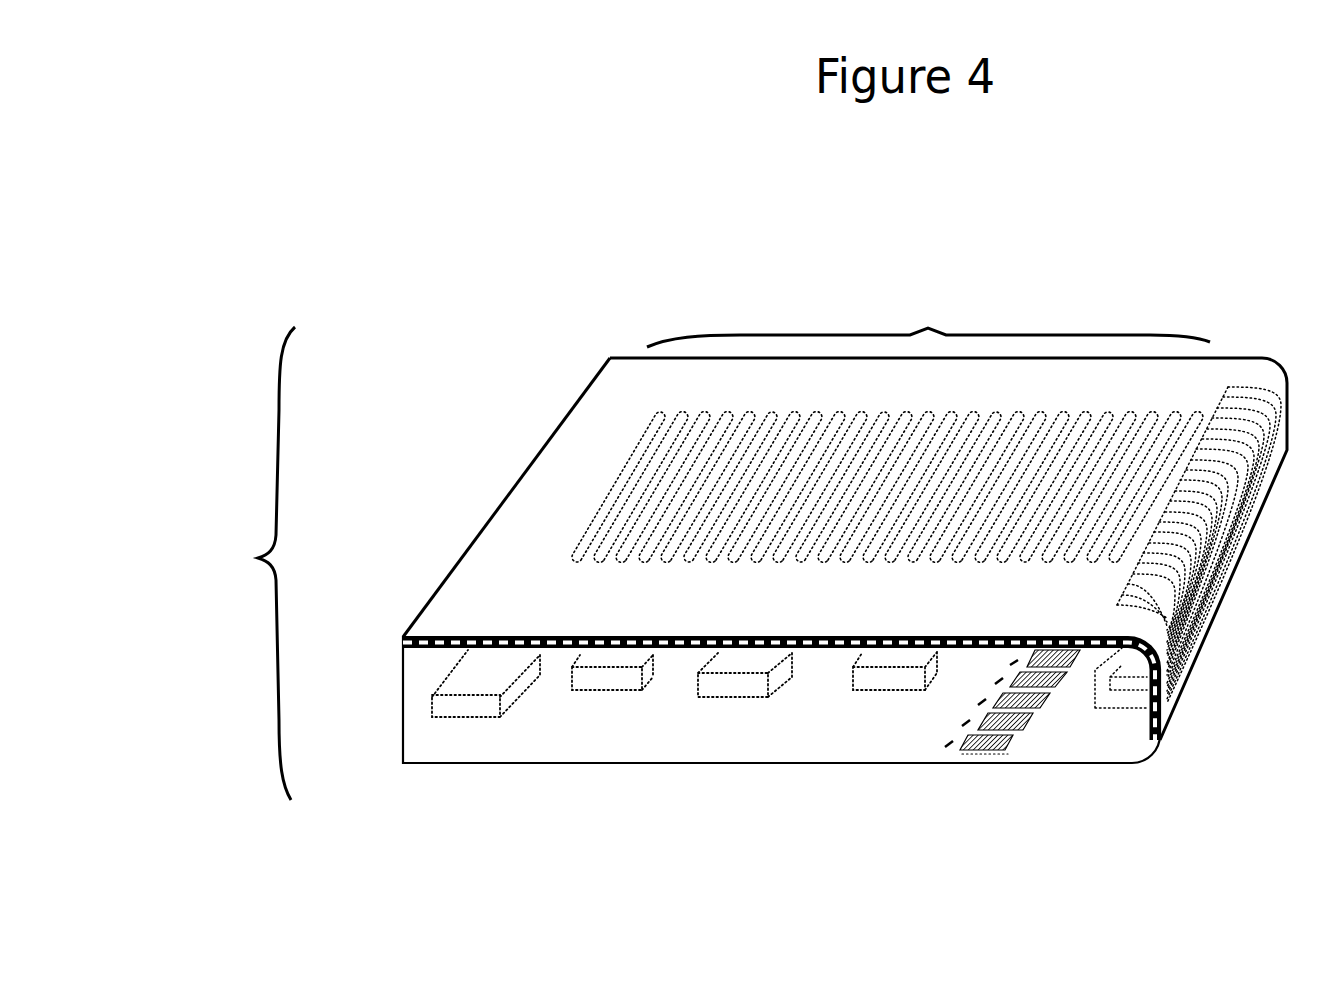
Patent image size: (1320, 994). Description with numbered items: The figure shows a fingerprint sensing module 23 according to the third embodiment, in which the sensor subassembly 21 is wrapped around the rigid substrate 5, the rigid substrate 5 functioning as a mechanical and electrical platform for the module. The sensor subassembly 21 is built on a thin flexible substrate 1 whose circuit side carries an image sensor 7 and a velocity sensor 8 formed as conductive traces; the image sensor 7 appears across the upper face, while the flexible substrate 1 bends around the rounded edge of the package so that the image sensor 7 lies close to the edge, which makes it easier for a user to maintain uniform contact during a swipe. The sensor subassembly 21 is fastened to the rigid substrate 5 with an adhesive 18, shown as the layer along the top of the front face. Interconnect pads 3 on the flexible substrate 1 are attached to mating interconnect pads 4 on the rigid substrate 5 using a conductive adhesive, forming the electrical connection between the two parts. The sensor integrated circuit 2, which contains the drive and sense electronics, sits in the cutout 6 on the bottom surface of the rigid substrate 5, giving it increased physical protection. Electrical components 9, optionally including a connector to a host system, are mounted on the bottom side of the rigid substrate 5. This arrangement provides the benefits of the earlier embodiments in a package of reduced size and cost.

The flexible substrate 1 is at (608, 360).
The sensor integrated circuit 2 is at (1138, 687).
The interconnect pads 3 is at (1013, 742).
The interconnect pads 4 is at (980, 745).
The rigid substrate 5 is at (400, 695).
The cutout 6 is at (1095, 710).
The image sensor 7 is at (1233, 378).
The velocity sensor 8 is at (630, 557).
The electrical components 9 is at (490, 717).
The adhesive 18 is at (400, 644).
The sensor subassembly 21 is at (928, 304).
The fingerprint sensing module 23 is at (228, 563).